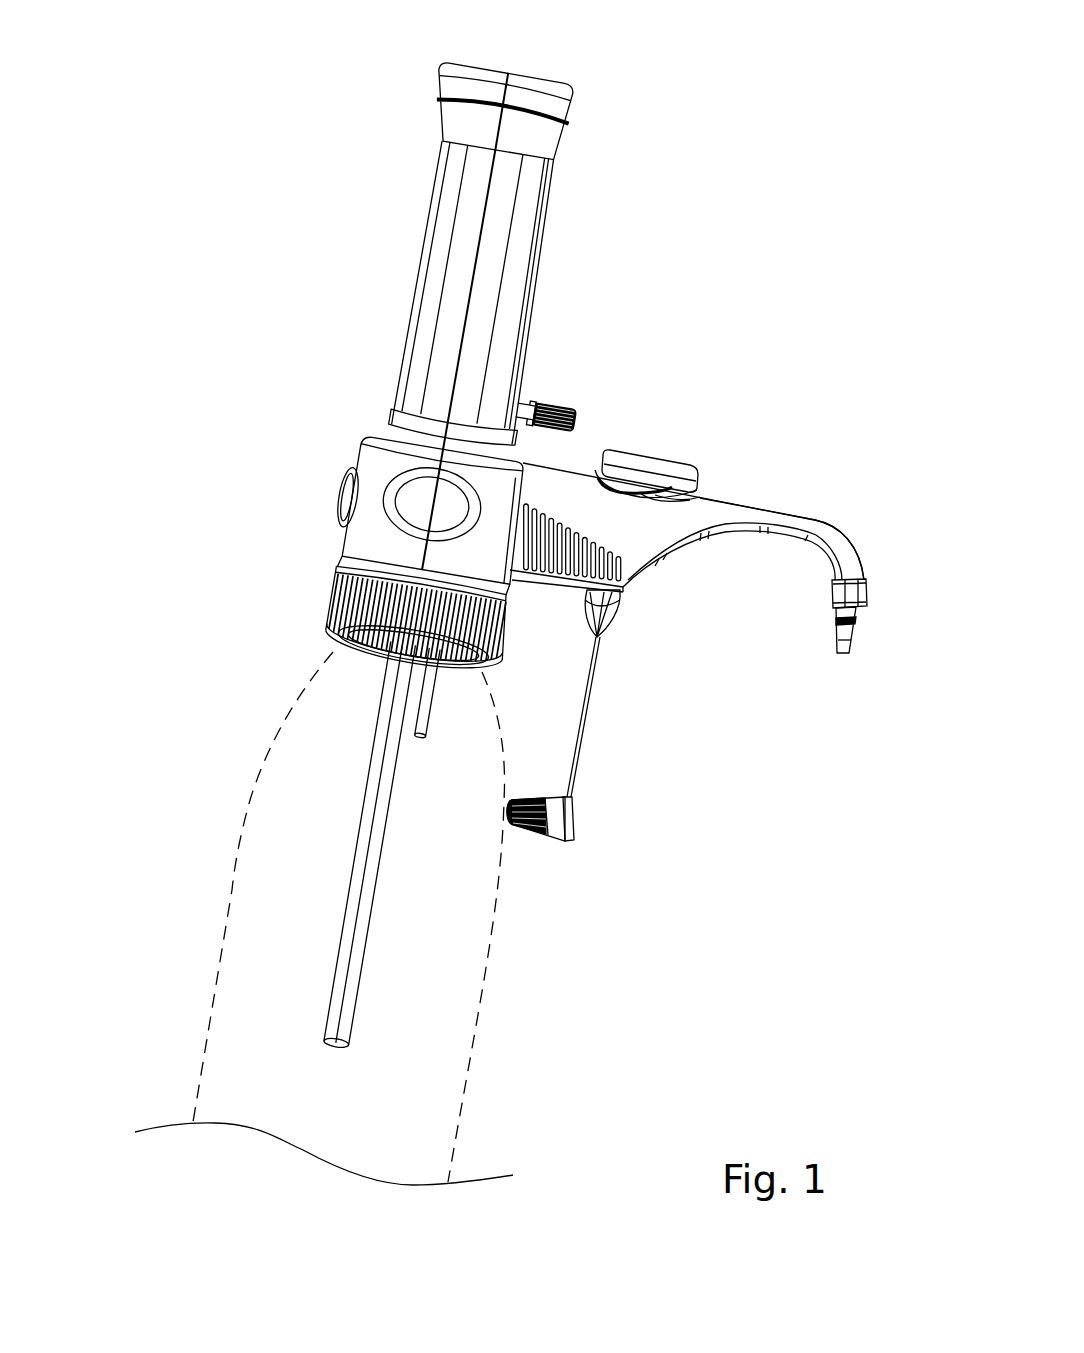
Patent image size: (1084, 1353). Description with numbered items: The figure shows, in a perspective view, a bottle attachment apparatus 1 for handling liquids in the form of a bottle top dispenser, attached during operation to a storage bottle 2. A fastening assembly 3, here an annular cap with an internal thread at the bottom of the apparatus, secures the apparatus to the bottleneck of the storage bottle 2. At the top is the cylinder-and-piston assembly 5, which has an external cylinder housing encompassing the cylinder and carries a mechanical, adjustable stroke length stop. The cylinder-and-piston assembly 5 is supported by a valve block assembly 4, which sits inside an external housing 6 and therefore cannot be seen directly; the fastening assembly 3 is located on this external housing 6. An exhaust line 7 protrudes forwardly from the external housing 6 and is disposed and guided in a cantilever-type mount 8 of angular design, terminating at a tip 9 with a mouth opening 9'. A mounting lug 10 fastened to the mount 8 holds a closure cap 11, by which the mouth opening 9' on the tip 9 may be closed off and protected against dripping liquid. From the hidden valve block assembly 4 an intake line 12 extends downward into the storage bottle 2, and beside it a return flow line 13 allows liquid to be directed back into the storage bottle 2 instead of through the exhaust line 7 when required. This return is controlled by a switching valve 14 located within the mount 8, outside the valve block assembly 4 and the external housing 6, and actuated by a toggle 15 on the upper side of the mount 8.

The bottle attachment apparatus 1 is at (666, 332).
The storage bottle 2 is at (252, 793).
The fastening assembly 3 is at (337, 582).
The valve block assembly 4 is at (320, 490).
The cylinder-and-piston assembly 5 is at (392, 185).
The external housing 6 is at (373, 453).
The exhaust line 7 is at (784, 497).
The cantilever-type mount 8 is at (728, 513).
The tip 9 is at (871, 613).
The mouth opening 9' is at (870, 651).
The mounting lug 10 is at (593, 673).
The closure cap 11 is at (572, 820).
The intake line 12 is at (353, 910).
The return flow line 13 is at (427, 695).
The switching valve 14 is at (686, 568).
The toggle 15 is at (620, 455).